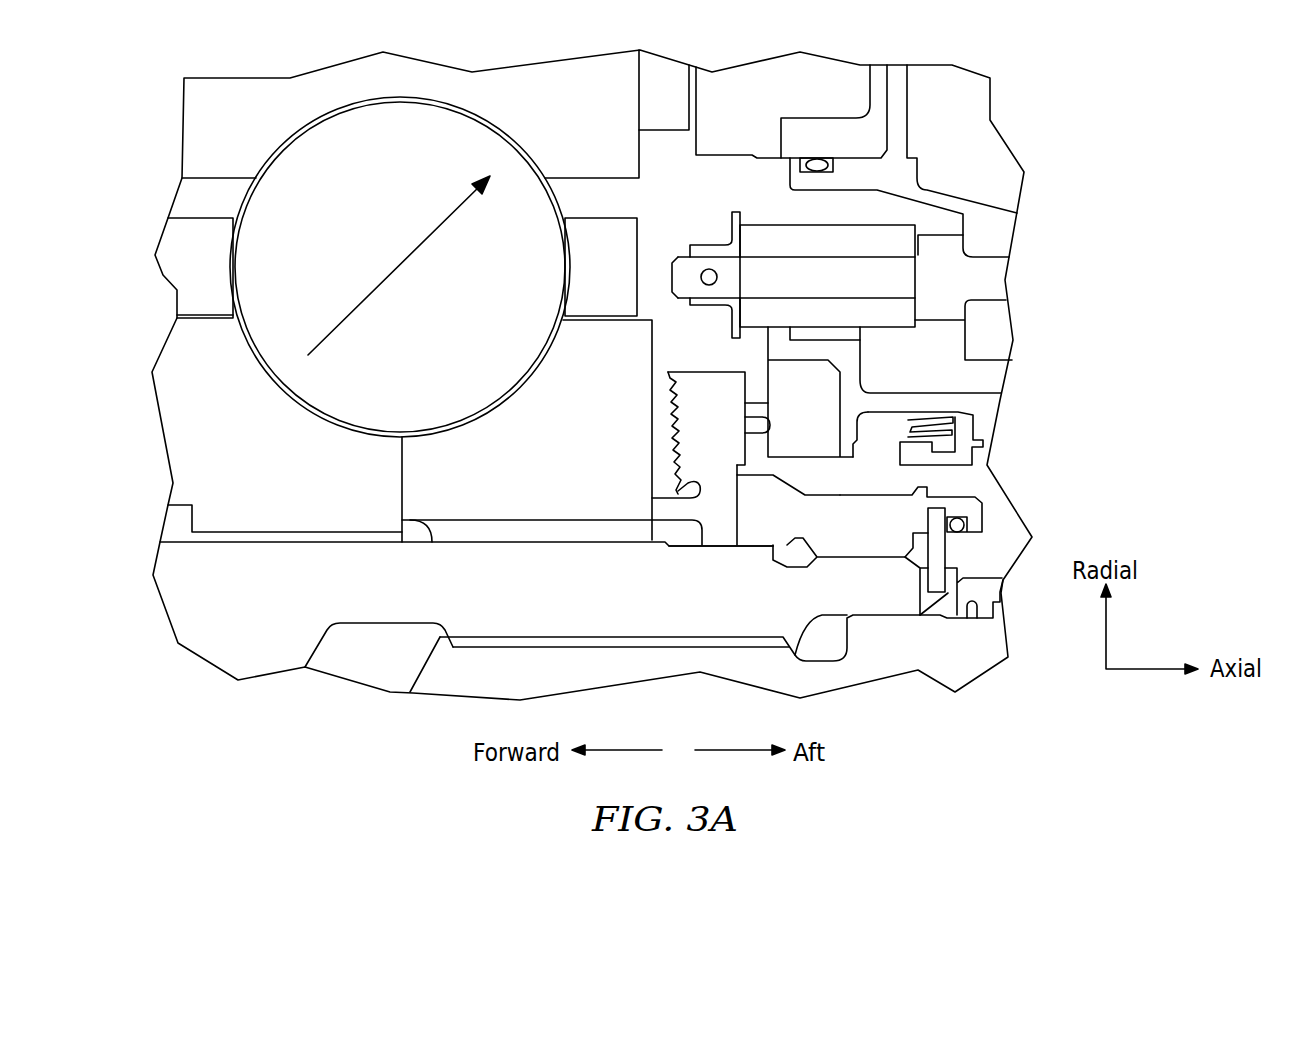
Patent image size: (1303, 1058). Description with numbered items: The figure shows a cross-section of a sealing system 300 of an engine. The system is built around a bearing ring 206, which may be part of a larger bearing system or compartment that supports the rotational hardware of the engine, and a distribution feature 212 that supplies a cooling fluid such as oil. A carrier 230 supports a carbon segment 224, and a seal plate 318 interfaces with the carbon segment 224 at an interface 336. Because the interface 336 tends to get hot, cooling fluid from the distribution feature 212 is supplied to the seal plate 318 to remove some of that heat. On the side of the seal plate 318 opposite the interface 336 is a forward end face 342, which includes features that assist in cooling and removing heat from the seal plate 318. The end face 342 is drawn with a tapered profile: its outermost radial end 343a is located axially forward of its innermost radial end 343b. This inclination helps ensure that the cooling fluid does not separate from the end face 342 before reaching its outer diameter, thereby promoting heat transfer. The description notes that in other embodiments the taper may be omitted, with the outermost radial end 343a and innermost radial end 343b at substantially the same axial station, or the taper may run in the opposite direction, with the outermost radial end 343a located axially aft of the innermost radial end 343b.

The sealing system 300 is at (1108, 165).
The bearing ring 206 is at (495, 483).
The distribution feature 212 is at (560, 527).
The carbon segment 224 is at (817, 400).
The carrier 230 is at (842, 353).
The seal plate 318 is at (718, 487).
The interface 336 is at (770, 437).
The end face 342 is at (675, 467).
The outermost radial end 343a is at (697, 375).
The innermost radial end 343b is at (717, 547).